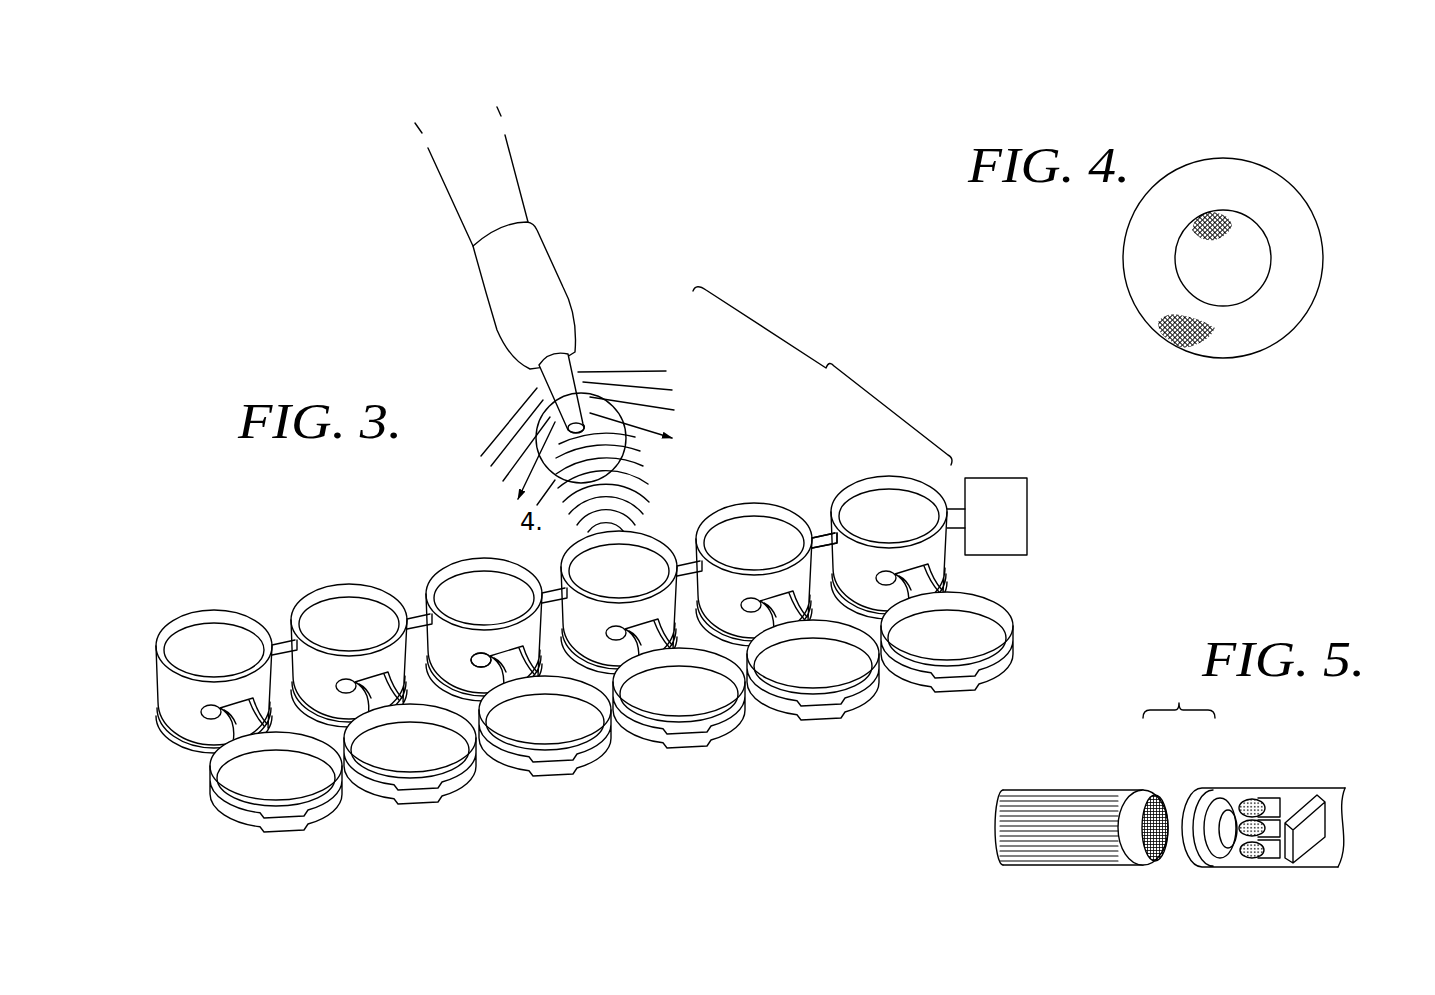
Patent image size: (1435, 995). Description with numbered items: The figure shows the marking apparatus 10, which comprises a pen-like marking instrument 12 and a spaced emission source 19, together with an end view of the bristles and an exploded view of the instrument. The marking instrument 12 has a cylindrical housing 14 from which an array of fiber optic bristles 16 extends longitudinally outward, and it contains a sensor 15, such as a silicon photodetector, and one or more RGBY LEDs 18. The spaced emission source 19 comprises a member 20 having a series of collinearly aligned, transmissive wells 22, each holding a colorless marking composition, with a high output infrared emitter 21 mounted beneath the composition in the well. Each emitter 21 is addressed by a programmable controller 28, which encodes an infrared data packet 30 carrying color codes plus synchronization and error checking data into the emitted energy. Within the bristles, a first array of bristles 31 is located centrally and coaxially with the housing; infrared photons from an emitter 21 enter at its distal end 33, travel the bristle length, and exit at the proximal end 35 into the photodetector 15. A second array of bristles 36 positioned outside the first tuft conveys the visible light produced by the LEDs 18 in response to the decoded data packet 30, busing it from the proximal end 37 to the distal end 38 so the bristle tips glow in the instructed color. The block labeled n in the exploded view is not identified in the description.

In FIG. 3, the apparatus 10 is at (268, 319).
In FIG. 3, the marking instrument 12 is at (468, 228).
In FIG. 5, the marking instrument 12 is at (1271, 835).
In FIG. 3, the cylindrical housing 14 is at (515, 168).
In FIG. 5, the cylindrical housing 14 is at (1328, 788).
In FIG. 5, the sensor 15 is at (1227, 808).
In FIG. 3, the array of fiber optic bristles 16 is at (565, 385).
In FIG. 4, the array of fiber optic bristles 16 is at (1324, 299).
In FIG. 5, the array of fiber optic bristles 16 is at (1074, 816).
In FIG. 5, the RGBY LED 18 is at (1273, 798).
In FIG. 3, the spaced emission source 19 is at (743, 710).
In FIG. 3, the member 20 is at (825, 533).
In FIG. 3, the emitter 21 is at (477, 654).
In FIG. 3, the well 22 is at (338, 584).
In FIG. 3, the programmable controller 28 is at (1017, 512).
In FIG. 3, the infrared data packet 30 is at (613, 492).
In FIG. 4, the first array of bristles 31 is at (1235, 218).
In FIG. 4, the distal end 33 is at (1192, 222).
In FIG. 5, the proximal end 35 is at (1173, 805).
In FIG. 4, the second array of bristles 36 is at (1177, 348).
In FIG. 5, the second array of bristles 36 is at (1075, 869).
In FIG. 5, the proximal end 37 is at (1142, 848).
In FIG. 5, the distal end 38 is at (998, 850).
In FIG. 5, the sensor block n is at (1307, 847).